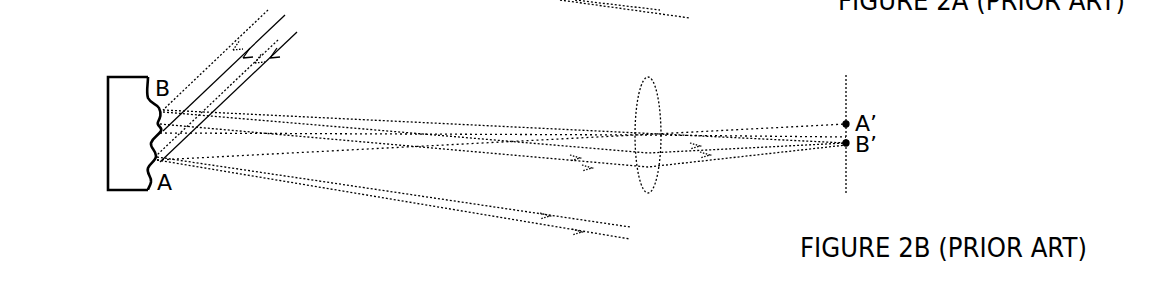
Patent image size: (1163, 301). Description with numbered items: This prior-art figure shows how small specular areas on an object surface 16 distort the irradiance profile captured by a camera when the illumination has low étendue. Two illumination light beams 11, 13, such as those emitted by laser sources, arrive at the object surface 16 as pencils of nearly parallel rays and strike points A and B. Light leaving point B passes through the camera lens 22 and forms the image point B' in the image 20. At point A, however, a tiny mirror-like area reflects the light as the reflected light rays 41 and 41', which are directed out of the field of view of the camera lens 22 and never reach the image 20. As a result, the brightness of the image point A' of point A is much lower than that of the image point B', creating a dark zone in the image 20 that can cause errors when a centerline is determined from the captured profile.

The object surface 16 is at (134, 76).
The illumination light beam 11 is at (217, 58).
The illumination light beam 13 is at (315, 43).
The camera lens 22 is at (647, 108).
The image 20 is at (847, 92).
The reflected light ray 41' is at (419, 192).
The reflected light ray 41 is at (410, 230).